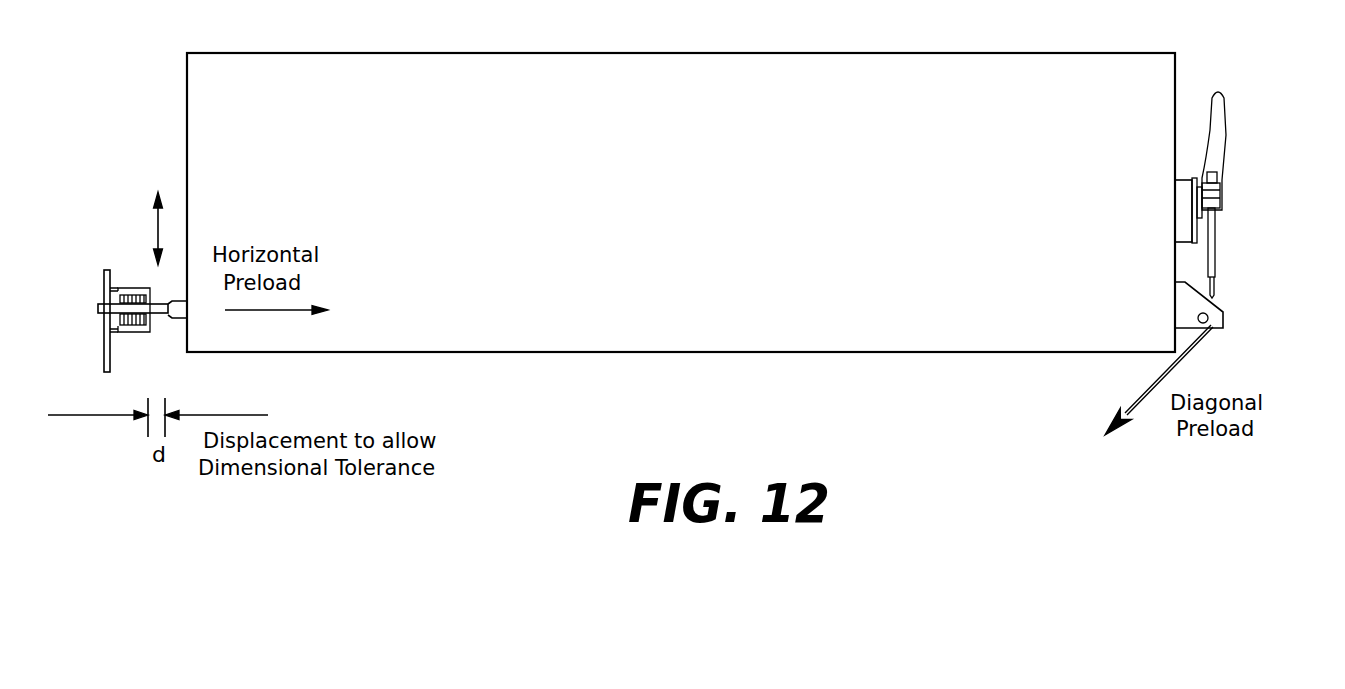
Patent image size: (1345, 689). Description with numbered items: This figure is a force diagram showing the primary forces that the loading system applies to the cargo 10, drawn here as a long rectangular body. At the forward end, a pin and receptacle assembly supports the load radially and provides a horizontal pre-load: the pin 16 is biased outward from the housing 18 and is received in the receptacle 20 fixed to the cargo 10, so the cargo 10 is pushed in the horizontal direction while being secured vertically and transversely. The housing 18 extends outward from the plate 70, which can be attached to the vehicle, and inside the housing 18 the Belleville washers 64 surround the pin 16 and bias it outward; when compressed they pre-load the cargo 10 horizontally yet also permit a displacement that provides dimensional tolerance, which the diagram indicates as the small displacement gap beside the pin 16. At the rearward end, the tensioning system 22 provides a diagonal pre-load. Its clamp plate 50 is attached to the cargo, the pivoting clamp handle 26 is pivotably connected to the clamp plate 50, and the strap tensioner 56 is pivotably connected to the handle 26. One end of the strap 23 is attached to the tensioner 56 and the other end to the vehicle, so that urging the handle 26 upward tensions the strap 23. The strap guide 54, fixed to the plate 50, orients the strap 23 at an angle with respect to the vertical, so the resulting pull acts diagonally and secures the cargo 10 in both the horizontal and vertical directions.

The cargo 10 is at (820, 68).
The pin 16 is at (158, 316).
The housing 18 is at (130, 326).
The receptacle 20 is at (176, 320).
The tensioning system 22 is at (1260, 151).
The strap 23 is at (1215, 293).
The clamp handle 26 is at (1223, 110).
The clamp plate 50 is at (1180, 210).
The strap guide 54 is at (1210, 318).
The strap tensioner 56 is at (1215, 255).
The Belleville washers 64 is at (134, 290).
The plate 70 is at (104, 348).